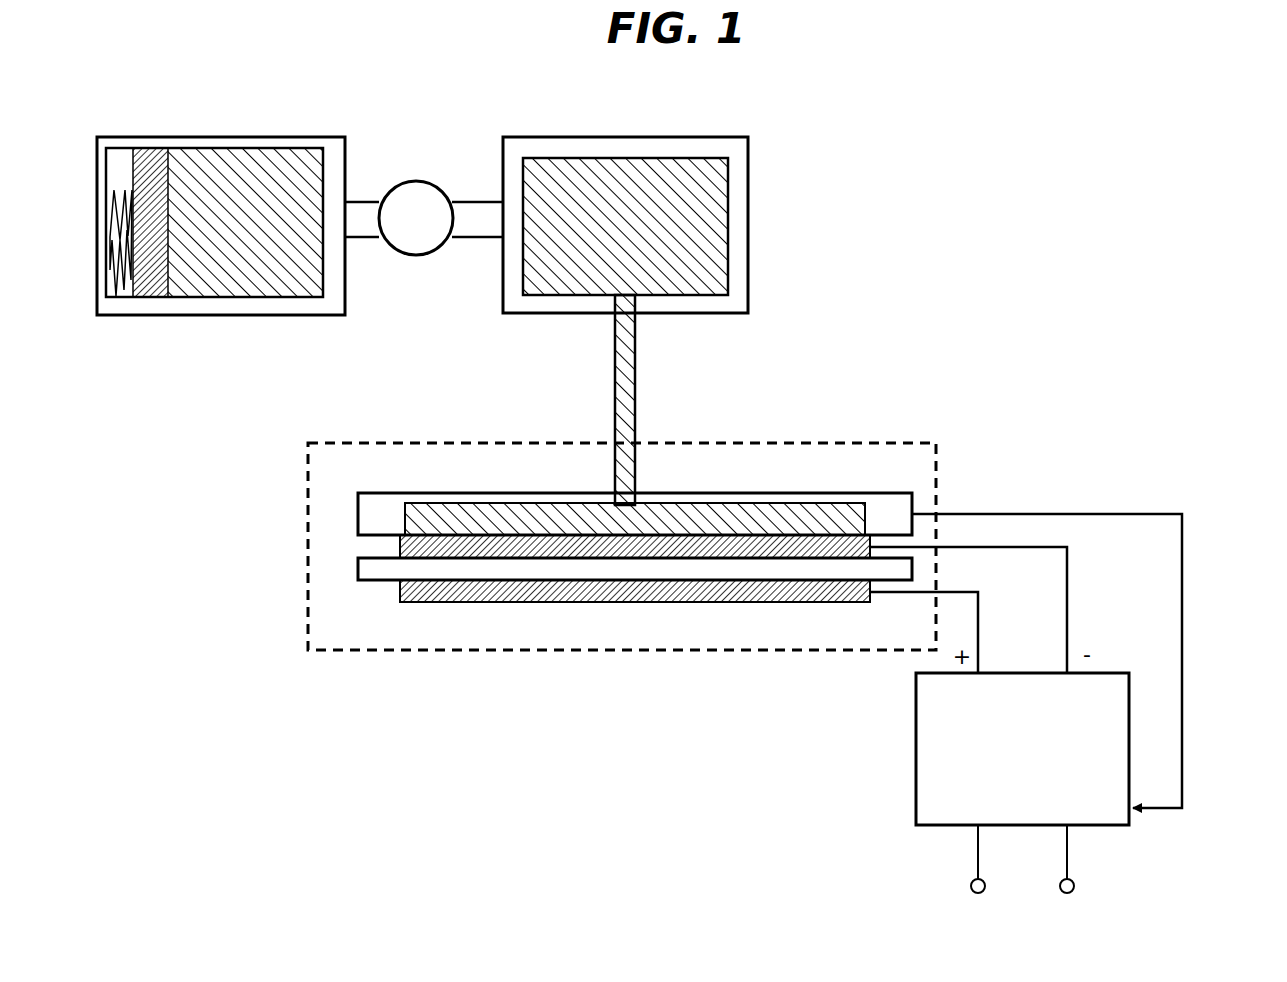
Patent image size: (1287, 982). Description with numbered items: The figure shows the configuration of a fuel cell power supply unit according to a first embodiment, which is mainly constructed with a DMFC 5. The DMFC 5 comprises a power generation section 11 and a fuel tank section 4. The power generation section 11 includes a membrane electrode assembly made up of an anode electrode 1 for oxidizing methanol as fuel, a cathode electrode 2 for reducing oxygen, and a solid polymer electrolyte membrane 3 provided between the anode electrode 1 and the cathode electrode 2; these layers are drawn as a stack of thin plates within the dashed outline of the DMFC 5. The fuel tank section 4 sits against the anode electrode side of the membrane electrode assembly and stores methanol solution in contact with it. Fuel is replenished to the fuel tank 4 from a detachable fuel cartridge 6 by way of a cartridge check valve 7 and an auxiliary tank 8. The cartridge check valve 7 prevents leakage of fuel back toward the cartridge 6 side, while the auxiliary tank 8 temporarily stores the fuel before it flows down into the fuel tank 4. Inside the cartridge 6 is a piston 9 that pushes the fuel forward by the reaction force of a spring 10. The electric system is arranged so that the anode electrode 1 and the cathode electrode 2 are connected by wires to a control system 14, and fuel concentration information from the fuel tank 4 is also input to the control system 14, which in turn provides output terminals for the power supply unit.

The anode electrode 1 is at (757, 553).
The cathode electrode 2 is at (508, 595).
The solid polymer electrolyte membrane 3 is at (620, 567).
The fuel tank section 4 is at (358, 512).
The DMFC 5 is at (880, 443).
The fuel cartridge 6 is at (286, 137).
The cartridge check valve 7 is at (414, 190).
The auxiliary tank 8 is at (692, 137).
The piston 9 is at (155, 289).
The spring 10 is at (130, 260).
The power generation section 11 is at (355, 537).
The control system 14 is at (922, 745).